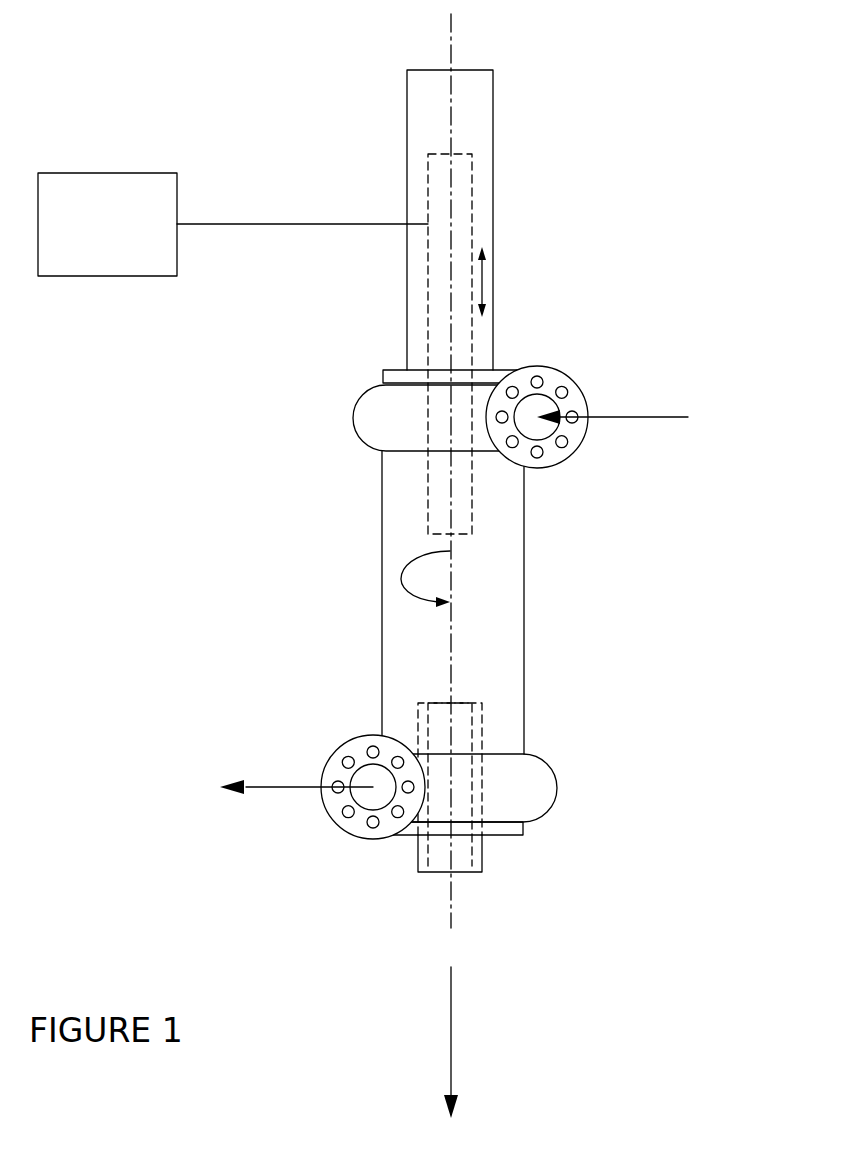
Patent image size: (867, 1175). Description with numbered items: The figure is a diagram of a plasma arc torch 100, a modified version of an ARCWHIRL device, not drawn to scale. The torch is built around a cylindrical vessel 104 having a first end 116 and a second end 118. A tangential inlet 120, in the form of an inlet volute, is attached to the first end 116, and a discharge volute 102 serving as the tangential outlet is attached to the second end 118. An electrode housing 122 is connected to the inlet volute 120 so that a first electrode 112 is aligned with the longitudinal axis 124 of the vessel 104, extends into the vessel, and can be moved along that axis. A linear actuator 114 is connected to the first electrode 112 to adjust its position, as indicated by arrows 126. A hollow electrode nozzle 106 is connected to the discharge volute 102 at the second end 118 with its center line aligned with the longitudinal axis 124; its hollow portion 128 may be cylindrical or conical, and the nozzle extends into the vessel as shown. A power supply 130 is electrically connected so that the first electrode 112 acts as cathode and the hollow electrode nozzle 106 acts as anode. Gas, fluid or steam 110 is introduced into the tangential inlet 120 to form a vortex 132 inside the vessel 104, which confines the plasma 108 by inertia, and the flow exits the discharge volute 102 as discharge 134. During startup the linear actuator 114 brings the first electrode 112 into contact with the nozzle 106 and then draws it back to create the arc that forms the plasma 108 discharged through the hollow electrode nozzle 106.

The plasma arc torch 100 is at (623, 33).
The discharge volute 102 is at (537, 770).
The cylindrical vessel 104 is at (513, 597).
The hollow electrode nozzle 106 is at (473, 867).
The plasma 108 is at (500, 1042).
The gas, fluid or steam 110 is at (674, 437).
The first electrode 112 is at (473, 218).
The linear actuator 114 is at (492, 137).
The first end 116 is at (305, 451).
The second end 118 is at (314, 734).
The tangential inlet 120 is at (570, 382).
The electrode housing 122 is at (487, 368).
The longitudinal axis 124 is at (451, 30).
The arrows 126 is at (482, 283).
The hollow portion 128 is at (463, 720).
The power supply 130 is at (153, 172).
The vortex 132 is at (393, 567).
The discharge 134 is at (233, 805).